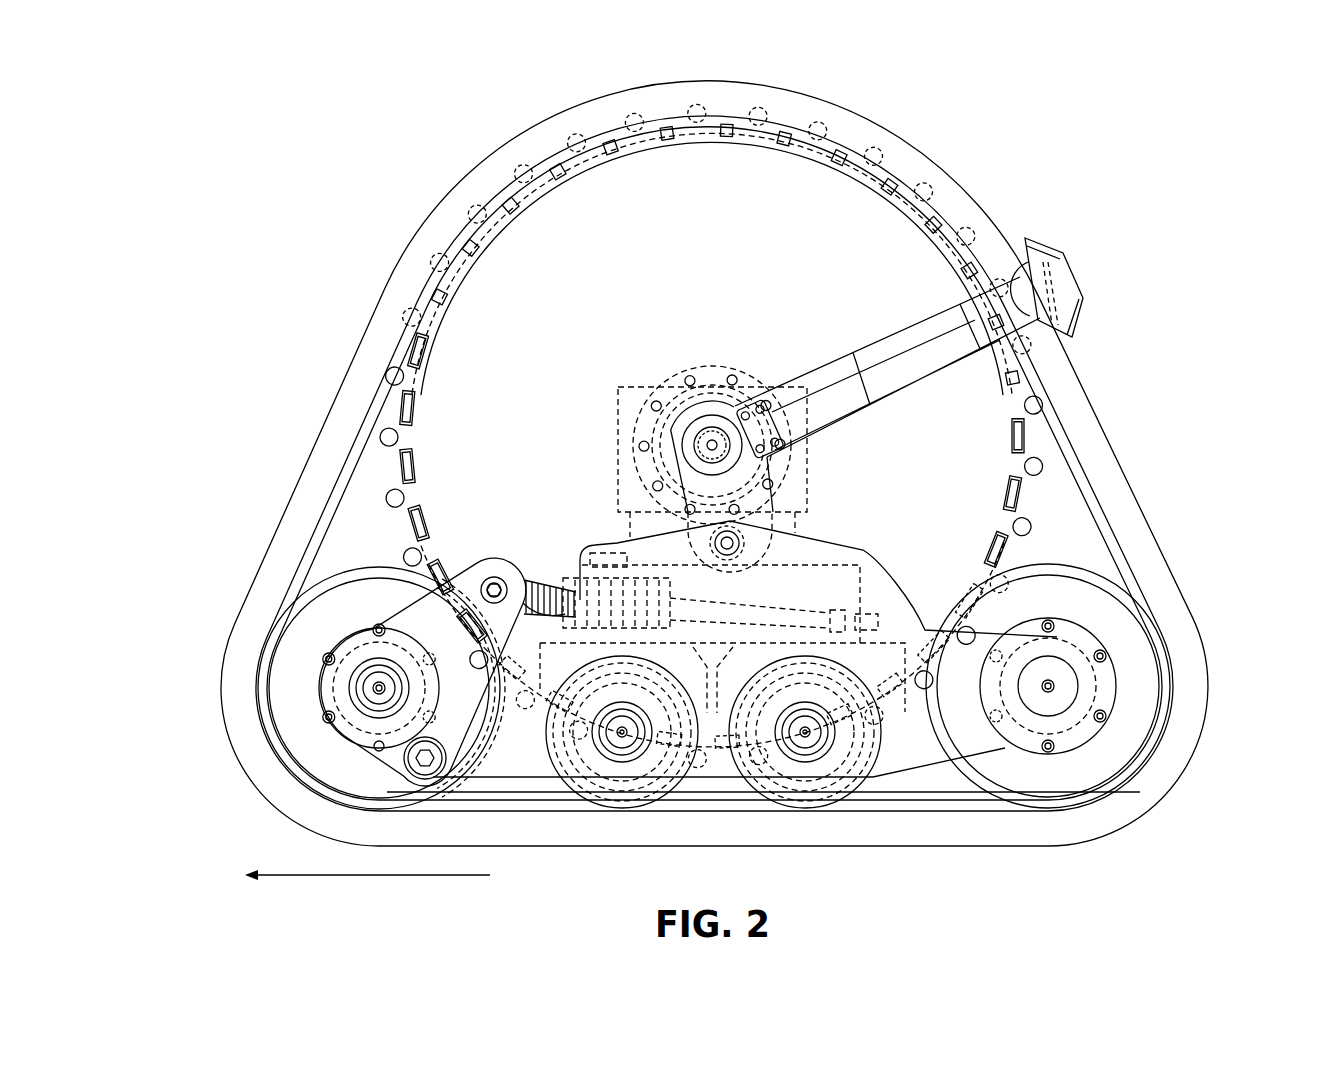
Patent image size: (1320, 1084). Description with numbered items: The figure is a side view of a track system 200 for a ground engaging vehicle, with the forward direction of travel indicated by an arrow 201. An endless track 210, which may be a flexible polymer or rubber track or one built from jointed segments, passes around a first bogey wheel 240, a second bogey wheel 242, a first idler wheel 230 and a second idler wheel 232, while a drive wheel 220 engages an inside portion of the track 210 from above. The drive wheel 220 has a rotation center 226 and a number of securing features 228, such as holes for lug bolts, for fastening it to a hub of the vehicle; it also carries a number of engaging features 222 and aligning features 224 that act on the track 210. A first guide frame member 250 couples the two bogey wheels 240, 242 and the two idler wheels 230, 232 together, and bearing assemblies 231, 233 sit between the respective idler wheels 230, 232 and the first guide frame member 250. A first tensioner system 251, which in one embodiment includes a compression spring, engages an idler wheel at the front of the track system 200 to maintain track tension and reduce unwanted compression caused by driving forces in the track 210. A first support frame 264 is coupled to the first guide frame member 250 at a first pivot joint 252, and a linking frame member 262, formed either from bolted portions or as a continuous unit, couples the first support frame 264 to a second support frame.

The track system 200 is at (1030, 138).
The arrow 201 is at (366, 877).
The track 210 is at (1073, 398).
The drive wheel 220 is at (648, 429).
The engaging features 222 is at (388, 437).
The aligning features 224 is at (400, 466).
The rotation center 226 is at (710, 446).
The securing features 228 is at (688, 380).
The first idler wheel 230 is at (1130, 748).
The bearing assembly 231 is at (1073, 653).
The second idler wheel 232 is at (290, 638).
The bearing assembly 233 is at (353, 720).
The first bogey wheel 240 is at (628, 783).
The second bogey wheel 242 is at (820, 783).
The first guide frame member 250 is at (595, 560).
The first tensioner system 251 is at (518, 565).
The first pivot joint 252 is at (740, 542).
The linking frame member 262 is at (1062, 285).
The first support frame 264 is at (768, 497).